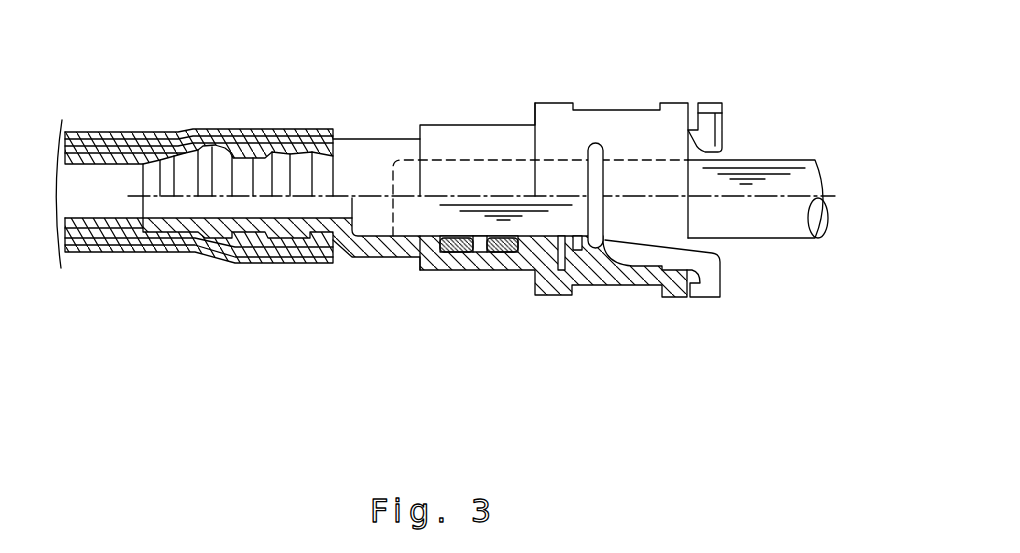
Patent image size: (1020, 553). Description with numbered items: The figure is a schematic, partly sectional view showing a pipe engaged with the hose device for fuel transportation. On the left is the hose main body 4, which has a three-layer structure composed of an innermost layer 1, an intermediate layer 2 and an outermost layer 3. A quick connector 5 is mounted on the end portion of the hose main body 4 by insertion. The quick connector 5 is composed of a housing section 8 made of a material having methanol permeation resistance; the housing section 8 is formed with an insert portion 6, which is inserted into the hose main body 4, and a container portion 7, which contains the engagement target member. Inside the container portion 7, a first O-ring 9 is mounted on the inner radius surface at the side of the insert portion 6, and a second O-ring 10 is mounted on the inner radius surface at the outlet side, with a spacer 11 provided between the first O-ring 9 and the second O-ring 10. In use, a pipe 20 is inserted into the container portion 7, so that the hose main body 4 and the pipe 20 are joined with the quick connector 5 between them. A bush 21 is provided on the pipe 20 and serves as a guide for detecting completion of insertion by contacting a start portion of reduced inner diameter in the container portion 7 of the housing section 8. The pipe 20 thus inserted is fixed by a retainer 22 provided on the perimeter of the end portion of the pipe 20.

The innermost layer 1 is at (72, 134).
The intermediate layer 2 is at (101, 146).
The outermost layer 3 is at (142, 150).
The hose main body 4 is at (73, 56).
The quick connector 5 is at (670, 93).
The insert portion 6 is at (218, 227).
The container portion 7 is at (525, 258).
The housing section 8 is at (363, 134).
The first O-ring 9 is at (452, 245).
The second O-ring 10 is at (503, 252).
The spacer 11 is at (455, 250).
The pipe 20 is at (760, 160).
The bush 21 is at (565, 262).
The retainer 22 is at (714, 279).